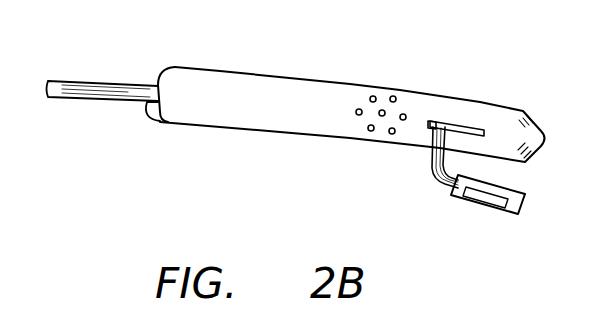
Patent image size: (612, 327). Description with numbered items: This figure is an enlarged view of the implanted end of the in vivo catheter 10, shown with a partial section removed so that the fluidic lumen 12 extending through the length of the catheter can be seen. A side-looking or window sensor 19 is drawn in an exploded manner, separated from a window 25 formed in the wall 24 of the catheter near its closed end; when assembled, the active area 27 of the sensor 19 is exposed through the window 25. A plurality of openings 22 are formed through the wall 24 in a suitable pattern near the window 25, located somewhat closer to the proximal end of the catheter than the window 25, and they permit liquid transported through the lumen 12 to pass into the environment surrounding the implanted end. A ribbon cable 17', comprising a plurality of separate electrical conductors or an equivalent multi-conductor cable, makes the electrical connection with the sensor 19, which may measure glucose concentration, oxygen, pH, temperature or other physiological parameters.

The catheter 10 is at (250, 71).
The lumen 12 is at (146, 120).
The ribbon cable 17' is at (253, 121).
The openings 22 is at (403, 114).
The wall 24 is at (436, 120).
The window 25 is at (479, 122).
The side-looking or window sensor 19 is at (527, 198).
The active area 27 is at (492, 210).